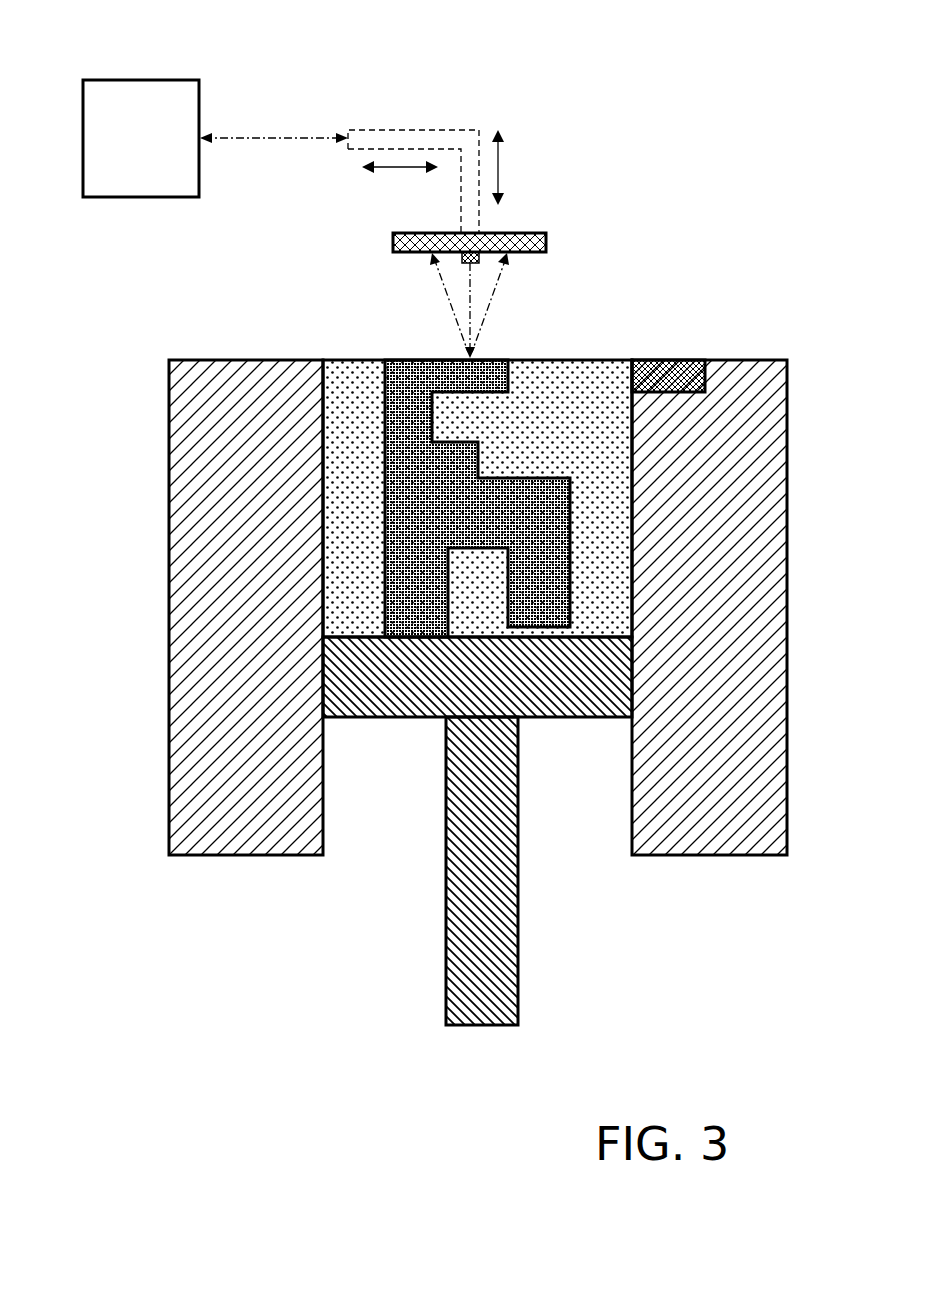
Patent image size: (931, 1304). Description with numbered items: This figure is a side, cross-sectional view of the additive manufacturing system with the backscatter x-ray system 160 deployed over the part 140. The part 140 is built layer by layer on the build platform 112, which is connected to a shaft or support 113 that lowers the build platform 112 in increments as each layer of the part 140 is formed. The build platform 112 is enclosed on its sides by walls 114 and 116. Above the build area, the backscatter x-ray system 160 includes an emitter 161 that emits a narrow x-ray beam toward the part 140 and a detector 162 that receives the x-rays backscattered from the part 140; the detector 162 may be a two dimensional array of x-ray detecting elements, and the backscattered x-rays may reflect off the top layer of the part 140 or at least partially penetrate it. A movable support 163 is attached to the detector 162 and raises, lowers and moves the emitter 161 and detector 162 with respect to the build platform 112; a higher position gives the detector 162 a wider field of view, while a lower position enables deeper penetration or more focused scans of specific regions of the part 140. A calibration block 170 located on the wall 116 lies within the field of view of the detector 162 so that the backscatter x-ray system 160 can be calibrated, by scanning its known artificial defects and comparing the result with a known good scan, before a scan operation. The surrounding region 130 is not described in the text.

The backscatter x-ray system 160 is at (482, 56).
The movable support 163 is at (402, 142).
The detector 162 is at (393, 243).
The emitter 161 is at (480, 263).
The calibration block 170 is at (697, 360).
The wall 114 is at (239, 629).
The wall 116 is at (754, 632).
The filler layer 130 is at (584, 444).
The part 140 is at (499, 531).
The build platform 112 is at (505, 694).
The support 113 is at (462, 1010).